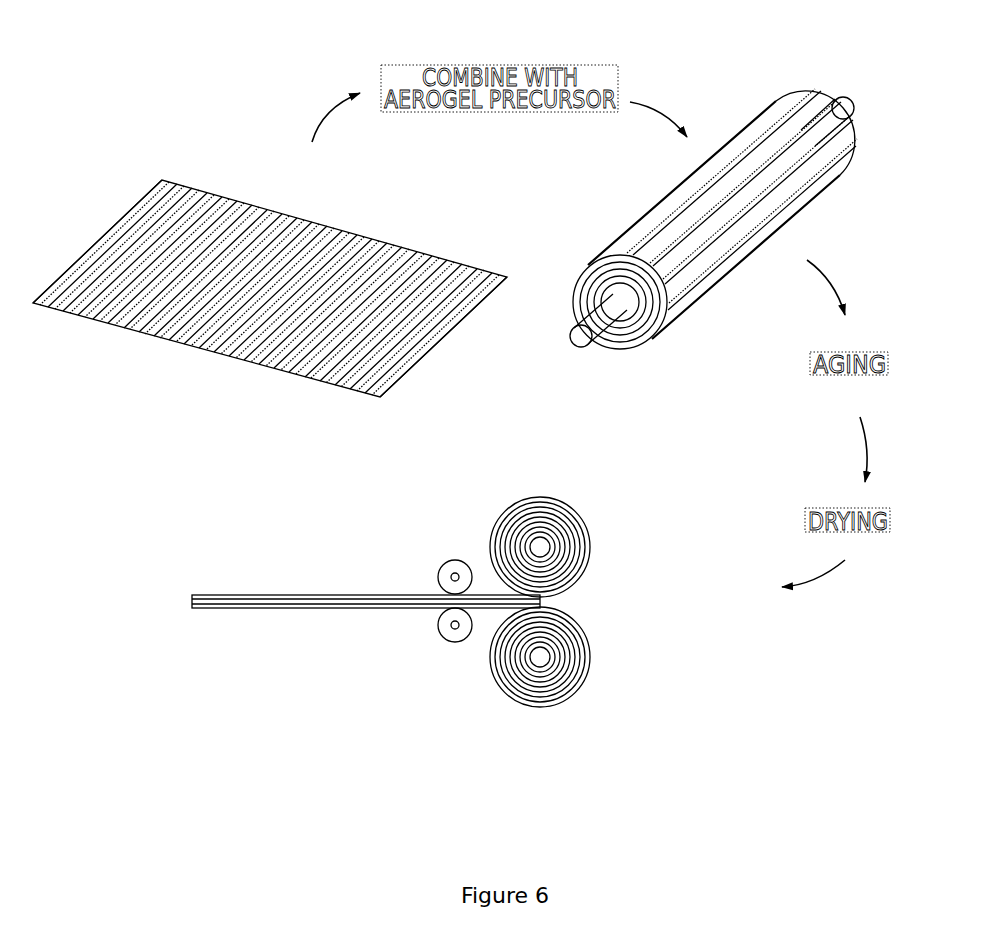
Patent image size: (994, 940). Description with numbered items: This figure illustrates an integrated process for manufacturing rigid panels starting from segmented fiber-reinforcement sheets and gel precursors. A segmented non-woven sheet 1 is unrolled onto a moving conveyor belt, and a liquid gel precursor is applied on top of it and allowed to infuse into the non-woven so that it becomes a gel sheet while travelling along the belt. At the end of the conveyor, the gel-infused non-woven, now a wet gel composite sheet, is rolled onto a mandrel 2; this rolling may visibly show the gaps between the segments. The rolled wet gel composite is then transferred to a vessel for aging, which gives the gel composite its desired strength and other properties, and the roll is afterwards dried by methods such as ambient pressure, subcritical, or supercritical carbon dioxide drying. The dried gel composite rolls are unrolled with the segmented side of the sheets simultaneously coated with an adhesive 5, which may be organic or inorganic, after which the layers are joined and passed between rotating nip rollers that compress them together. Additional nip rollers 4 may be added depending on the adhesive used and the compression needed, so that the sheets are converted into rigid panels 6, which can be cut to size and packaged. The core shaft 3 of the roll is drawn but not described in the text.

The segmented non-woven sheet 1 is at (218, 226).
The mandrel 2 is at (743, 124).
The core shaft 3 is at (827, 112).
The additional nip rollers 4 is at (432, 616).
The adhesive 5 is at (581, 602).
The rigid panels 6 is at (221, 621).